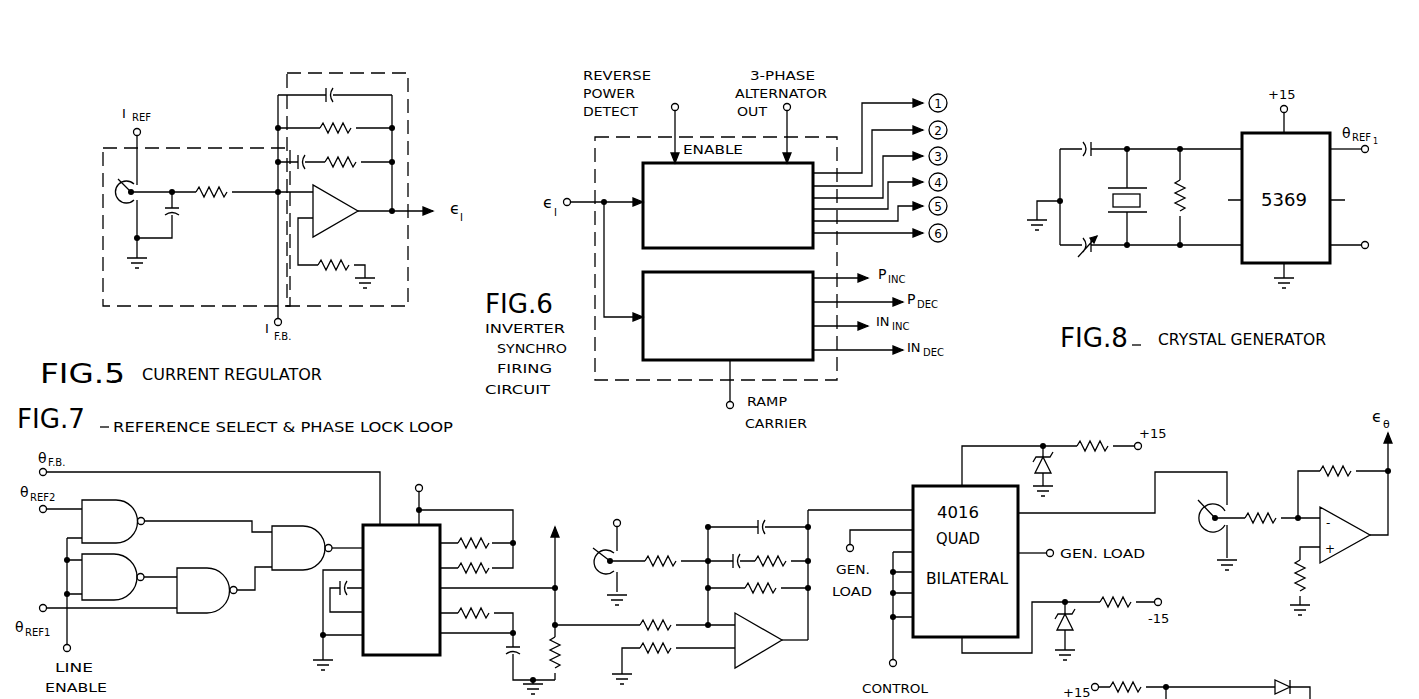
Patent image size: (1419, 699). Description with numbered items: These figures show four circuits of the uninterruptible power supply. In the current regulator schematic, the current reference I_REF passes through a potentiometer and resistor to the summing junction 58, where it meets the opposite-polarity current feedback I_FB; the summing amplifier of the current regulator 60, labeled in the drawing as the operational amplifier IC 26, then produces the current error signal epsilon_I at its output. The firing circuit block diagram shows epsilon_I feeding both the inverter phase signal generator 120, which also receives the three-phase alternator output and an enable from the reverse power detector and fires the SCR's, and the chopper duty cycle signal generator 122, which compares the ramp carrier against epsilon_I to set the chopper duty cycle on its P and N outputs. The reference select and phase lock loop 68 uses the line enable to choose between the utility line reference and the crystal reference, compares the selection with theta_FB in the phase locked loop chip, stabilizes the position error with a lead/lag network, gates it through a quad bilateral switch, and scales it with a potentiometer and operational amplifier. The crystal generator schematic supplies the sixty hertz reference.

In FIG. 5, the summing junction 58 is at (103, 255).
In FIG. 5, the current regulator 60 is at (412, 124).
In FIG. 5, the operational amplifier IC 26 is at (342, 214).
In FIG. 6, the inverter phase signal generator 120 is at (643, 172).
In FIG. 6, the chopper duty cycle signal generator 122 is at (643, 356).
In FIG. 7, the reference select and phase lock loop 68 is at (730, 487).